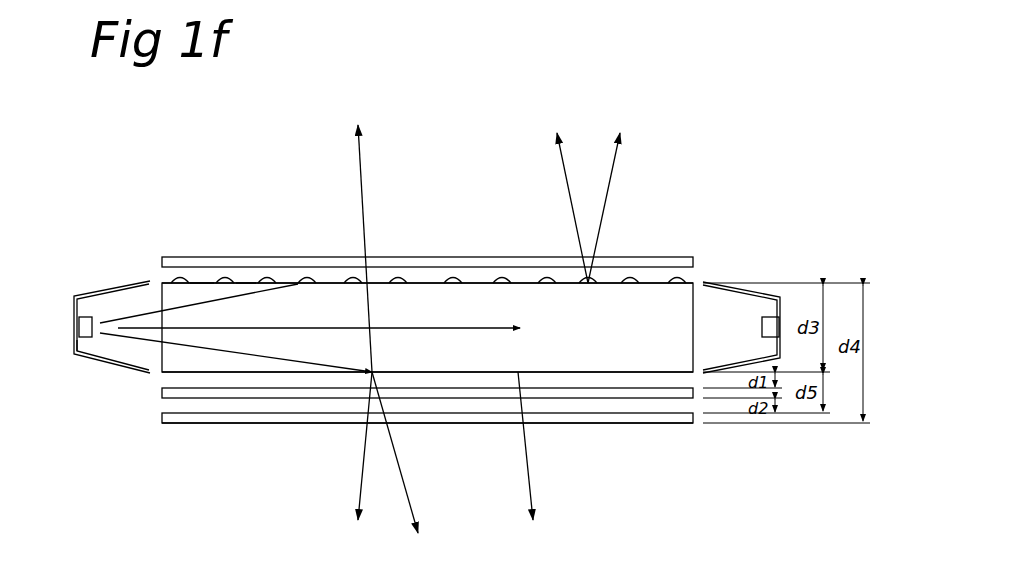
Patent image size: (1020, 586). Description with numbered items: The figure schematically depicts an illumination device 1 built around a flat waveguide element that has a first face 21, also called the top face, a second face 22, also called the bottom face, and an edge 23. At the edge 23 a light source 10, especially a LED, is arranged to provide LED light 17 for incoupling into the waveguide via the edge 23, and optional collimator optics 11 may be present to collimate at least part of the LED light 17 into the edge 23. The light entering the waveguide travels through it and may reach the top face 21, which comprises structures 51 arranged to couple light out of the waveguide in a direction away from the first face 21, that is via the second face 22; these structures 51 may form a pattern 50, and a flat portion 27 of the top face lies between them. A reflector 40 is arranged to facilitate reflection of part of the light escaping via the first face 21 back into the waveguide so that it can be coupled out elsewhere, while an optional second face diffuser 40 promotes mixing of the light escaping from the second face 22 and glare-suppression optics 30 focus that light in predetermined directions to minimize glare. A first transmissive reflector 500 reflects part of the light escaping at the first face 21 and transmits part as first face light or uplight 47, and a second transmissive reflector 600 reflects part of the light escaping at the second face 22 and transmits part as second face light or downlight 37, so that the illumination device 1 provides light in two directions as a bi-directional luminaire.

The illumination device 1 is at (653, 210).
The light source 10 is at (79, 330).
The collimator optics 11 is at (137, 378).
The LED light 17 is at (107, 347).
The first face 21 is at (283, 282).
The second face 22 is at (312, 372).
The edge 23 is at (160, 300).
The flat portion of upper surface 27 is at (197, 298).
The glare-suppression optics 30 is at (213, 423).
The second face light 37 is at (408, 487).
The reflector 40 is at (162, 268).
The first face light 47 is at (358, 152).
The pattern 50 is at (155, 274).
The structures 51 is at (222, 282).
The first transmissive reflector 500 is at (420, 247).
The second transmissive reflector 600 is at (572, 428).